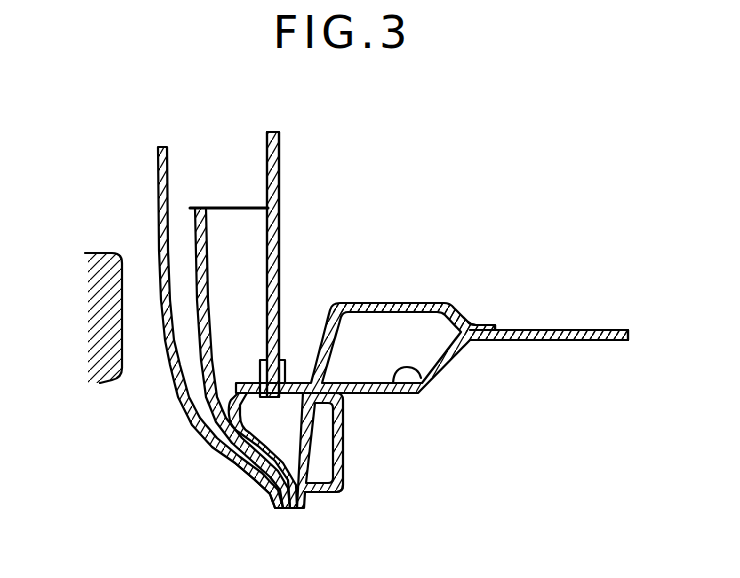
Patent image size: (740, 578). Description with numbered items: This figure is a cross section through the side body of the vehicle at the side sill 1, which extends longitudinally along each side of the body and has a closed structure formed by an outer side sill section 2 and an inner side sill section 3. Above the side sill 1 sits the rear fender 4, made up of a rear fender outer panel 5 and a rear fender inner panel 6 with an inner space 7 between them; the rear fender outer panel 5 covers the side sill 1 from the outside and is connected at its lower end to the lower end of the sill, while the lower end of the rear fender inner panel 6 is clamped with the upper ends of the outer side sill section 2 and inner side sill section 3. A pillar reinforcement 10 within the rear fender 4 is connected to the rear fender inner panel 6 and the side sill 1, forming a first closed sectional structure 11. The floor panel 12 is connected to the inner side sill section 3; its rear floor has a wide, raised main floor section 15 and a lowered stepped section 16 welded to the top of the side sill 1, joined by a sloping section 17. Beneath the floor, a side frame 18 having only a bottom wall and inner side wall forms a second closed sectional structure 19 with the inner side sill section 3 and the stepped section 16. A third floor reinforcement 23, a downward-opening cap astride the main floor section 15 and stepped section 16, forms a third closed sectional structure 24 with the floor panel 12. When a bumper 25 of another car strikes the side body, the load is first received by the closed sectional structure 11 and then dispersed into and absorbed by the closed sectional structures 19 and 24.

The side sill 1 is at (168, 475).
The outer side sill section 2 is at (230, 470).
The inner side sill section 3 is at (262, 478).
The rear fender 4 is at (95, 112).
The rear fender outer panel 5 is at (165, 179).
The rear fender inner panel 6 is at (267, 155).
The inner space 7 is at (242, 182).
The pillar reinforcement 10 is at (196, 255).
The closed sectional structure 11 is at (240, 278).
The floor panel 12 is at (543, 328).
The main floor section 15 is at (592, 330).
The stepped section 16 is at (423, 377).
The sloping section 17 is at (447, 358).
The side frame 18 is at (342, 493).
The closed sectional structure 19 is at (320, 438).
The third floor reinforcement 23 is at (433, 303).
The third closed sectional structure 24 is at (378, 344).
The bumper 25 is at (112, 387).